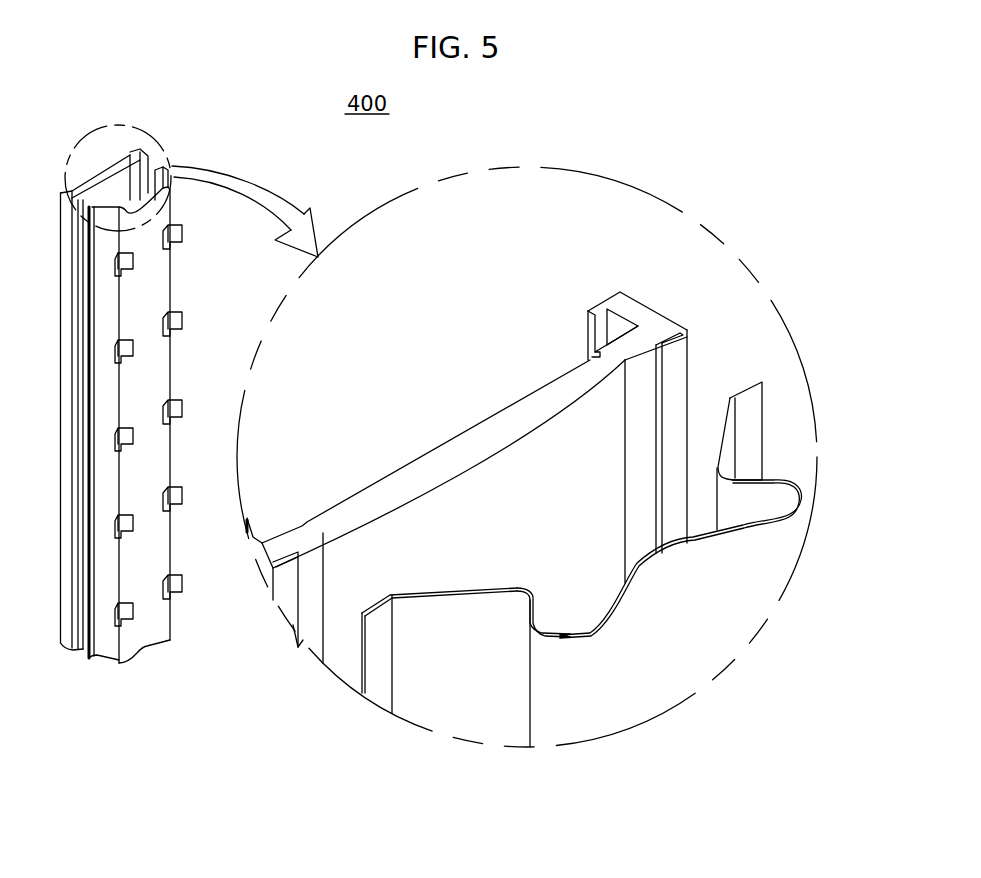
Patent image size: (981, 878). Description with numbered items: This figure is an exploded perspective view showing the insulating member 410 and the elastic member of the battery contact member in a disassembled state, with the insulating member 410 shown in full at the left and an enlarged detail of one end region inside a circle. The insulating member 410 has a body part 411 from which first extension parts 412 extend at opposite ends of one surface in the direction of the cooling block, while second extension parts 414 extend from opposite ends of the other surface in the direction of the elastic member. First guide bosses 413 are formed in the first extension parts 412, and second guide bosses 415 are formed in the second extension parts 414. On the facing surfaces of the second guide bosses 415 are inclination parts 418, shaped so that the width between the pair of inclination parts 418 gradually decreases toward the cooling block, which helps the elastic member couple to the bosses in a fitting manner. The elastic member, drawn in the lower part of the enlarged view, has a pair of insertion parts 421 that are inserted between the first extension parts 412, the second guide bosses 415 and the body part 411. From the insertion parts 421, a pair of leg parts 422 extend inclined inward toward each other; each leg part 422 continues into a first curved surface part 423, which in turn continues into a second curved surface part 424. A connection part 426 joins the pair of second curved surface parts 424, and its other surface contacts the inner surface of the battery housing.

The insulating member 410 is at (103, 168).
The body part 411 is at (522, 390).
The first extension parts 412 is at (626, 358).
The first guide bosses 413 is at (600, 302).
The second extension parts 414 is at (673, 350).
The second guide bosses 415 is at (686, 382).
The inclination parts 418 is at (660, 372).
The insertion part 421 is at (360, 645).
The leg part 422 is at (437, 598).
The first curved surface part 423 is at (523, 563).
The second curved surface part 424 is at (563, 640).
The connection part 426 is at (657, 583).